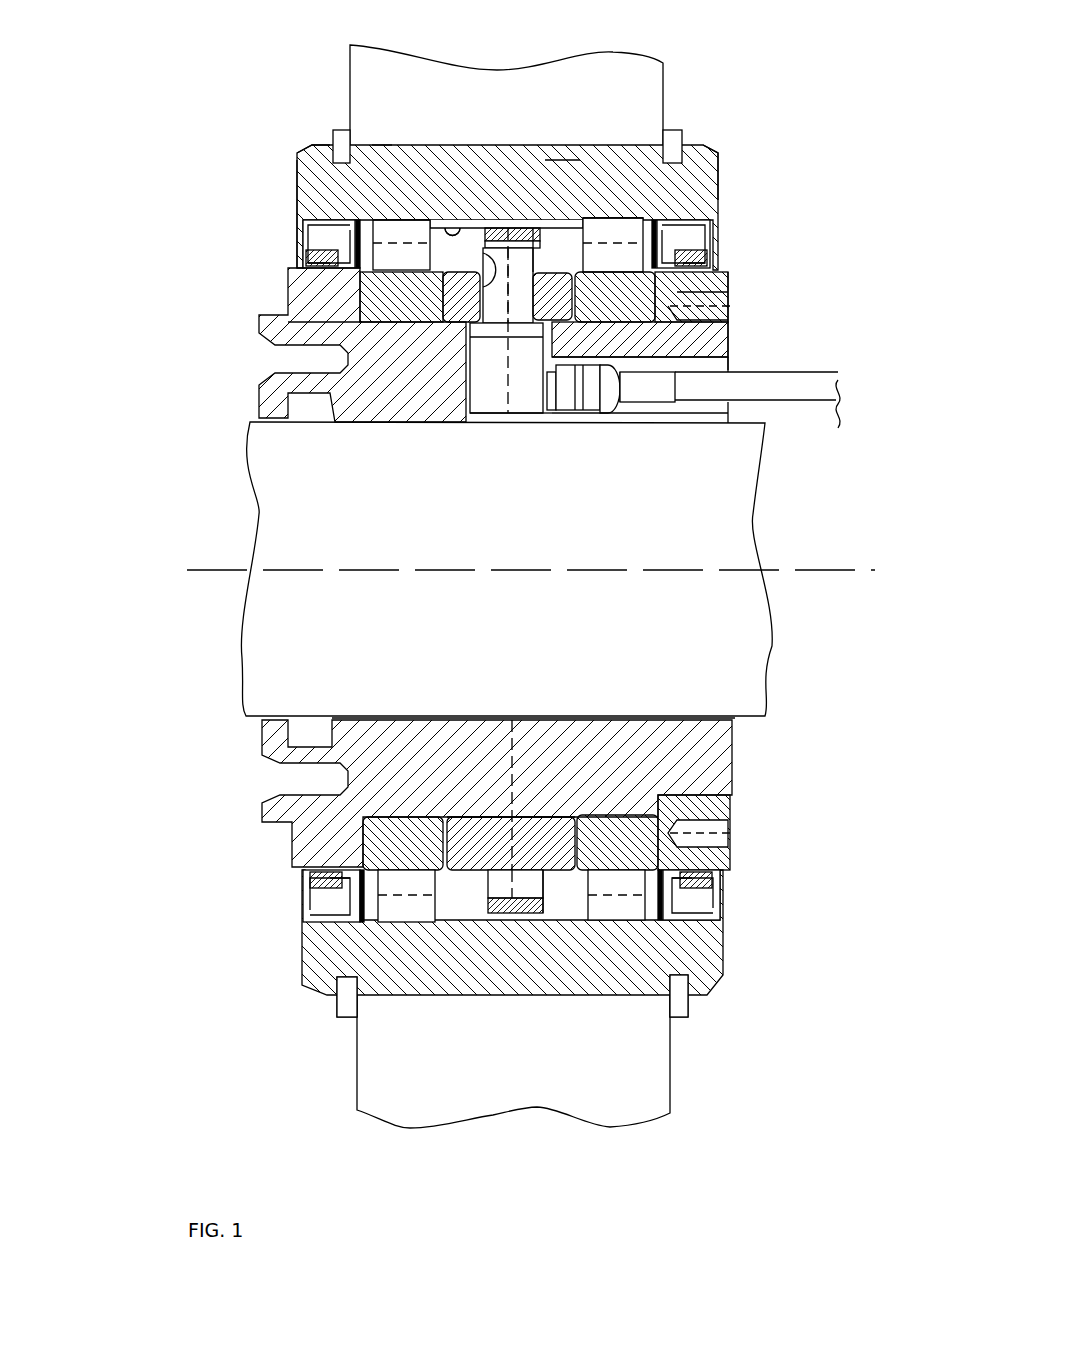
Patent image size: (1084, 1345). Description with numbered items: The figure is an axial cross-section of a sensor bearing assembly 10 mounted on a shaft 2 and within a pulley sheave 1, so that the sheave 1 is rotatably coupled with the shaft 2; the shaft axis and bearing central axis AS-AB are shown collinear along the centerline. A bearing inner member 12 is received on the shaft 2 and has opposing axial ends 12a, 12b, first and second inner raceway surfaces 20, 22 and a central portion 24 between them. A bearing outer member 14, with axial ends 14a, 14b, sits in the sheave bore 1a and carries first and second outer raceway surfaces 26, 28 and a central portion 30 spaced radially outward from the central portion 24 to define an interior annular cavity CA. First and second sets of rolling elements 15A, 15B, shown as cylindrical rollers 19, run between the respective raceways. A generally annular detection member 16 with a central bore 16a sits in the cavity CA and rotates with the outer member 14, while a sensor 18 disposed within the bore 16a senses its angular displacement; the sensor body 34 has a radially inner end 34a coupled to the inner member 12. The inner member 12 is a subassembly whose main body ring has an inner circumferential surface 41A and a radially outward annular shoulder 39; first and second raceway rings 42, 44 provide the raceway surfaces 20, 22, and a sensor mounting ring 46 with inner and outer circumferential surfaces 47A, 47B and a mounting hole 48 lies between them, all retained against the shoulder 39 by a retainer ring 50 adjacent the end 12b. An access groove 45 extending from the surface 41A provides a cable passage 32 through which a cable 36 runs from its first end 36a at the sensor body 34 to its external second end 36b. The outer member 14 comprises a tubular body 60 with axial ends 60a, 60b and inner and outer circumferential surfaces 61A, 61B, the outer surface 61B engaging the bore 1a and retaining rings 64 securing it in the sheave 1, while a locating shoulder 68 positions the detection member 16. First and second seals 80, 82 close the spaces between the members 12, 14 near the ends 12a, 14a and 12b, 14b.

The pulley sheave 1 is at (268, 67).
The bore 1a is at (562, 158).
The shaft 2 is at (178, 430).
The sensor bearing assembly 10 is at (150, 182).
The bearing inner member 12 is at (476, 377).
The axial end 12a is at (286, 298).
The axial end 12b is at (735, 355).
The bearing outer member 14 is at (262, 170).
The axial end 14a is at (300, 956).
The axial end 14b is at (725, 950).
The first set of rolling elements 15A is at (395, 222).
The second set of rolling elements 15B is at (628, 222).
The detection member 16 is at (489, 223).
The central bore 16a is at (539, 255).
The sensor 18 is at (533, 426).
The cylindrical rollers 19 is at (410, 905).
The first inner raceway surface 20 is at (365, 400).
The second inner raceway surface 22 is at (622, 390).
The central portion 24 is at (466, 306).
The first outer raceway surface 26 is at (412, 222).
The second outer raceway surface 28 is at (618, 222).
The central portion 30 is at (482, 220).
The cable passage 32 is at (682, 416).
The sensor body 34 is at (493, 402).
The radially inner end 34a is at (520, 422).
The cable 36 is at (716, 402).
The first end 36a is at (585, 402).
The second end 36b is at (842, 420).
The annular shoulder 39 is at (300, 850).
The inner circumferential surface 41A is at (648, 718).
The first raceway ring 42 is at (403, 818).
The second raceway ring 44 is at (608, 815).
The access groove 45 is at (732, 373).
The sensor mounting ring 46 is at (546, 815).
The inner circumferential surface 47A is at (475, 822).
The outer circumferential surface 47B is at (560, 925).
The mounting hole 48 is at (485, 266).
The retainer ring 50 is at (734, 808).
The tubular body 60 is at (510, 201).
The axial end 60a is at (298, 170).
The axial end 60b is at (718, 175).
The inner circumferential surface 61A is at (455, 230).
The outer circumferential surface 61B is at (380, 145).
The retaining ring 64 is at (343, 133).
The locating shoulder 68 is at (486, 904).
The first seal 80 is at (300, 243).
The second seal 82 is at (714, 240).
The interior annular cavity CA is at (556, 241).
The shaft axis and bearing central axis AS-AB is at (848, 570).